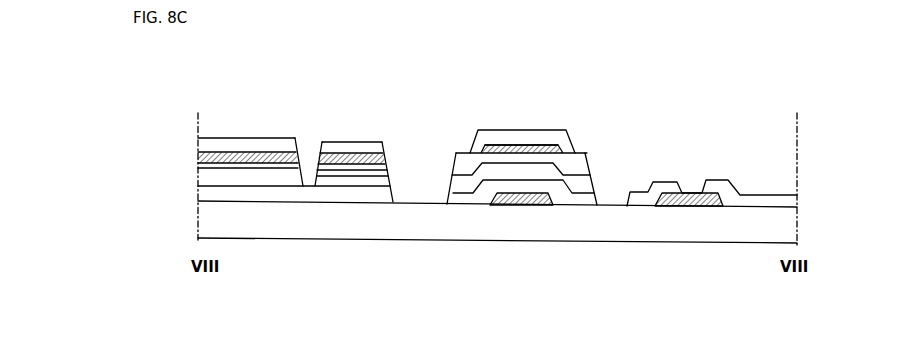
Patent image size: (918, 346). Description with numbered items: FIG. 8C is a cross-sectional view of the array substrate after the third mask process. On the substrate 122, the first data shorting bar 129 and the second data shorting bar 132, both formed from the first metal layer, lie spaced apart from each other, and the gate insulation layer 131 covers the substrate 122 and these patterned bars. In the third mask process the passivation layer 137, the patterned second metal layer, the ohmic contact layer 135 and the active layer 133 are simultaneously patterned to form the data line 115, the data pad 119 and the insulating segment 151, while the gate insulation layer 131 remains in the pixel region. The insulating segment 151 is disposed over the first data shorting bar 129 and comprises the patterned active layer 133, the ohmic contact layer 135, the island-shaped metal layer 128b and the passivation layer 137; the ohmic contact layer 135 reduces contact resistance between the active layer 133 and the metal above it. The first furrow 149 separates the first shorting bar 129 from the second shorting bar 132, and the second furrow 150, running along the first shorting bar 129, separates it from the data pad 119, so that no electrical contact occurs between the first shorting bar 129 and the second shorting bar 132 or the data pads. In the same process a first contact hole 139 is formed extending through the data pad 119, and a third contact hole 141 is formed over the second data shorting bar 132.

The data line 115 is at (233, 146).
The data pad 119 is at (338, 141).
The substrate 122 is at (529, 239).
The island-shaped metal layer 128b is at (540, 149).
The first data shorting bar 129 is at (492, 207).
The gate insulation layer 131 is at (206, 193).
The second data shorting bar 132 is at (676, 205).
The active layer 133 is at (207, 179).
The ohmic contact layer 135 is at (206, 166).
The passivation layer 137 is at (205, 142).
The first contact hole 139 is at (308, 152).
The third contact hole 141 is at (692, 170).
The first furrow 149 is at (619, 186).
The second furrow 150 is at (419, 173).
The insulating segment 151 is at (600, 175).